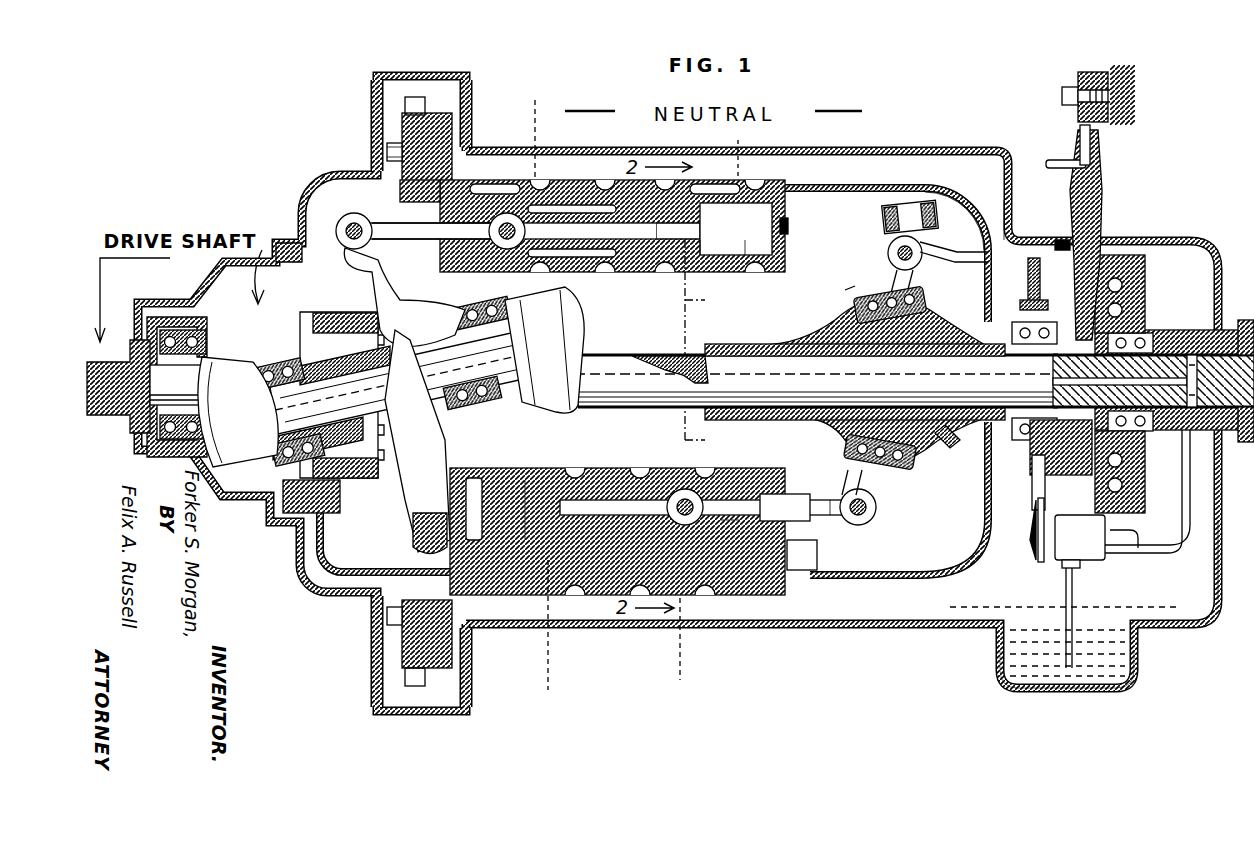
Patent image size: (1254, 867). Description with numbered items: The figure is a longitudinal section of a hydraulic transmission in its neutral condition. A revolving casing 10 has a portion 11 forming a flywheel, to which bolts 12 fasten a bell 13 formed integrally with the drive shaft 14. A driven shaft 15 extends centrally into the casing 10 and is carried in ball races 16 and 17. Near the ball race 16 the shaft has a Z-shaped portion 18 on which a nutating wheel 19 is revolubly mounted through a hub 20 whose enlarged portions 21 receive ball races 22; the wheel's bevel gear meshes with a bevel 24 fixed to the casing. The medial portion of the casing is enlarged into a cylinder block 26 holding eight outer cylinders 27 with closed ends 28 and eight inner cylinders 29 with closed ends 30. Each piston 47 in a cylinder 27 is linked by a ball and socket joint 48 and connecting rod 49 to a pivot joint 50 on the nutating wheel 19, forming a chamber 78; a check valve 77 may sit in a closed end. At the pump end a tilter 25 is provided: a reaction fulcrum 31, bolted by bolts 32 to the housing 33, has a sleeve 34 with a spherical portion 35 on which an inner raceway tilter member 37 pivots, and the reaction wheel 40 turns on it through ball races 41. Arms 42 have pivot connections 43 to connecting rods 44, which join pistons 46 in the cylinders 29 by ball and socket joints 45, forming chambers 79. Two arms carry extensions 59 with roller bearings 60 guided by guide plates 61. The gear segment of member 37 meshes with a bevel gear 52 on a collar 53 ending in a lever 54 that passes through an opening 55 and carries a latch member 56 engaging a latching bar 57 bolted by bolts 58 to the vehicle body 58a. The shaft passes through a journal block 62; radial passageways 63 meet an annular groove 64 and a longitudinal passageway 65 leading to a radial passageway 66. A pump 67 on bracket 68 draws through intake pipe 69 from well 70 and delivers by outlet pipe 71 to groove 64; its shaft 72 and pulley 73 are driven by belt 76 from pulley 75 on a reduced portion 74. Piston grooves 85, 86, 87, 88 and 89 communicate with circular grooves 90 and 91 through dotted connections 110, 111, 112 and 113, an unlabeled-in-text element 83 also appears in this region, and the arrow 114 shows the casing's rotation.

The casing 10 is at (805, 600).
The flywheel portion 11 is at (448, 132).
The bolts 12 is at (370, 120).
The bell 13 is at (290, 240).
The drive shaft 14 is at (105, 420).
The driven shaft 15 is at (590, 355).
The ball race 16 is at (178, 318).
The ball race 17 is at (1165, 328).
The Z-shaped portion 18 is at (338, 385).
The nutating wheel 19 is at (420, 318).
The hub 20 is at (340, 345).
The enlarged portions 21 is at (268, 364).
The ball races 22 is at (268, 360).
The bevel 24 is at (352, 500).
The tilter 25 is at (835, 285).
The cylinder block 26 is at (748, 500).
The cylinders 27 is at (745, 258).
The closed end 28 is at (818, 186).
The cylinders 29 is at (825, 500).
The closed end 30 is at (412, 550).
The reaction fulcrum 31 is at (1135, 290).
The bolts 32 is at (1130, 256).
The housing 33 is at (1220, 560).
The sleeve 34 is at (1061, 447).
The spherical portion 35 is at (855, 332).
The inner raceway tilter member 37 is at (920, 448).
The outer tilter member 40 is at (925, 296).
The ball races 41 is at (870, 295).
The arms 42 is at (910, 282).
The pivot connection 43 is at (878, 512).
The connecting rod 44 is at (817, 548).
The ball and socket joint 45 is at (688, 489).
The piston 46 is at (530, 505).
The piston 47 is at (590, 190).
The ball and socket joint 48 is at (512, 249).
The connecting rod 49 is at (430, 239).
The pivot joint 50 is at (368, 225).
The bevel gear 52 is at (975, 450).
The collar 53 is at (1010, 360).
The lever 54 is at (1054, 230).
The opening 55 is at (1100, 238).
The spring actuated latch member 56 is at (1058, 160).
The latching bar 57 is at (1078, 80).
The bolts 58 is at (1062, 96).
The vehicle body 58a is at (1110, 75).
The extensions 59 is at (938, 247).
The roller bearing 60 is at (905, 186).
The guide plates 61 is at (1000, 210).
The journal block 62 is at (1200, 352).
The radial passageways 63 is at (1242, 318).
The annular groove 64 is at (1155, 335).
The longitudinal passageway 65 is at (735, 355).
The radial passageway 66 is at (670, 355).
The pump 67 is at (1095, 562).
The bracket 68 is at (1136, 533).
The intake pipe 69 is at (1010, 640).
The well 70 is at (1020, 693).
The outlet pipe 71 is at (1160, 553).
The shaft 72 is at (1030, 552).
The pulley 73 is at (1036, 566).
The reduced portion 74 is at (1020, 320).
The pulley 75 is at (1035, 262).
The belt 76 is at (1046, 480).
The check valve 77 is at (788, 228).
The chamber 78 is at (705, 258).
The chamber 79 is at (475, 478).
The fork arm 83 is at (417, 441).
The spring 85 is at (560, 205).
The annular groove 86 is at (736, 229).
The annular groove 87 is at (655, 272).
The annular groove 88 is at (595, 258).
The annular groove 89 is at (725, 500).
The circular groove 90 is at (495, 184).
The circular groove 91 is at (735, 184).
The connection 110 is at (720, 148).
The ducts 111 is at (549, 155).
The connection 112 is at (665, 642).
The connection 113 is at (548, 633).
The arrow 114 is at (244, 325).